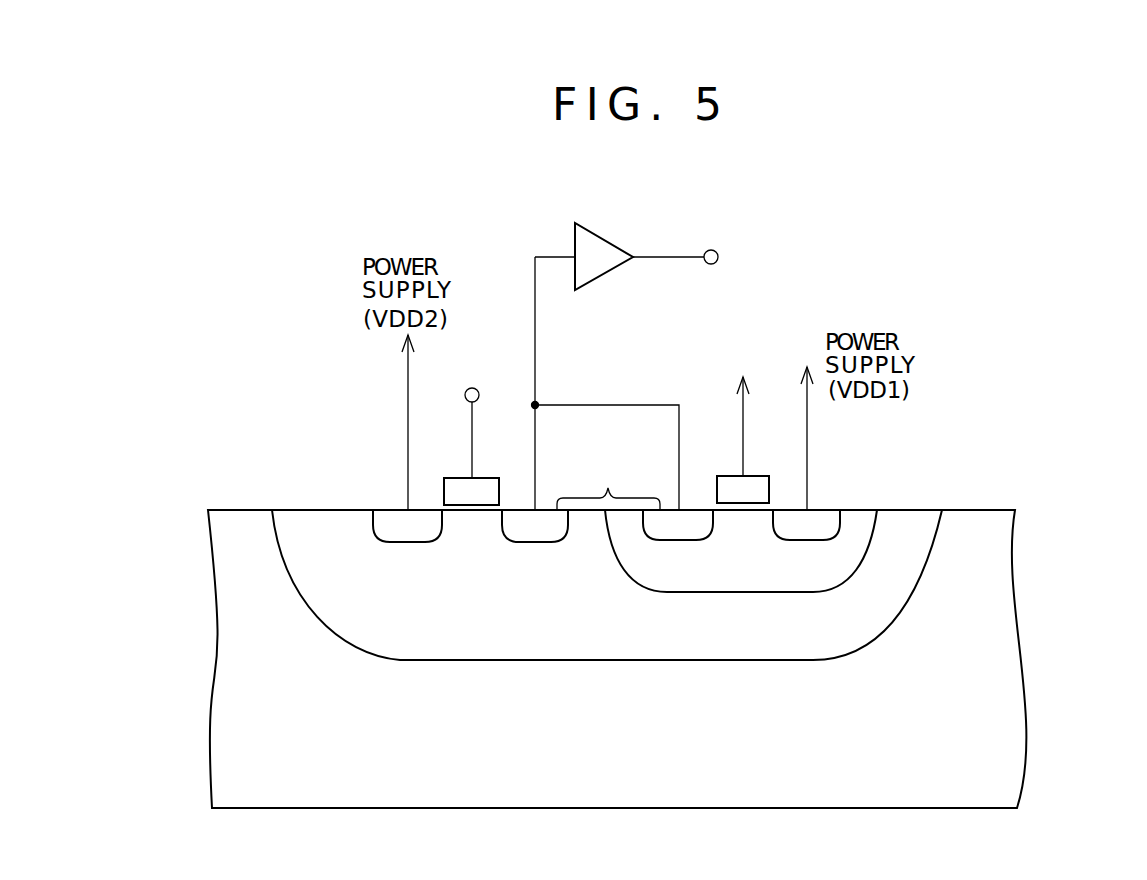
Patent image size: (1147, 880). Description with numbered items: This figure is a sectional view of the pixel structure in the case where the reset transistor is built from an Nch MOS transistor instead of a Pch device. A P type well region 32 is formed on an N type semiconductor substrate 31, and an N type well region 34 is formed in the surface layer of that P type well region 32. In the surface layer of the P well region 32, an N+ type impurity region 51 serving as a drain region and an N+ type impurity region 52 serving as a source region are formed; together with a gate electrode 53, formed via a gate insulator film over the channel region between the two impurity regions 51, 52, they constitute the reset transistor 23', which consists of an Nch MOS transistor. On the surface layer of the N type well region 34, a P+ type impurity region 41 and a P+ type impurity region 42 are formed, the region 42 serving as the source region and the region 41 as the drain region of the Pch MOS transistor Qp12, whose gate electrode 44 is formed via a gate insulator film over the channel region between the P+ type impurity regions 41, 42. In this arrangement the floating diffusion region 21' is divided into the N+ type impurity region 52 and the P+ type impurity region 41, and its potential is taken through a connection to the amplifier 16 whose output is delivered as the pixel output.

The amplifier 16 is at (600, 248).
The floating diffusion region 21' is at (606, 383).
The reset transistor 23' is at (297, 428).
The N type semiconductor substrate 31 is at (1002, 758).
The P type well region 32 is at (880, 607).
The N type well region 34 is at (847, 545).
The P+ type impurity region 41 is at (688, 508).
The P+ type impurity region 42 is at (815, 508).
The gate electrode 44 is at (760, 483).
The N+ type impurity region 51 is at (402, 510).
The N+ type impurity region 52 is at (528, 510).
The gate electrode 53 is at (448, 485).
The Pch MOS transistor Qp12 is at (920, 452).